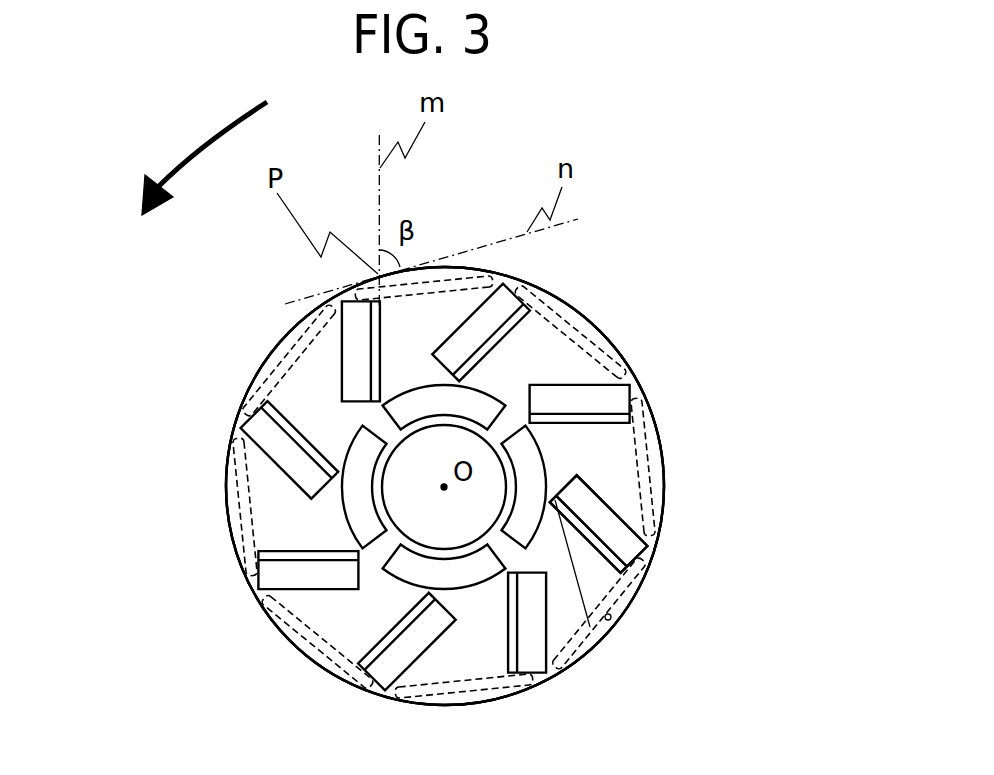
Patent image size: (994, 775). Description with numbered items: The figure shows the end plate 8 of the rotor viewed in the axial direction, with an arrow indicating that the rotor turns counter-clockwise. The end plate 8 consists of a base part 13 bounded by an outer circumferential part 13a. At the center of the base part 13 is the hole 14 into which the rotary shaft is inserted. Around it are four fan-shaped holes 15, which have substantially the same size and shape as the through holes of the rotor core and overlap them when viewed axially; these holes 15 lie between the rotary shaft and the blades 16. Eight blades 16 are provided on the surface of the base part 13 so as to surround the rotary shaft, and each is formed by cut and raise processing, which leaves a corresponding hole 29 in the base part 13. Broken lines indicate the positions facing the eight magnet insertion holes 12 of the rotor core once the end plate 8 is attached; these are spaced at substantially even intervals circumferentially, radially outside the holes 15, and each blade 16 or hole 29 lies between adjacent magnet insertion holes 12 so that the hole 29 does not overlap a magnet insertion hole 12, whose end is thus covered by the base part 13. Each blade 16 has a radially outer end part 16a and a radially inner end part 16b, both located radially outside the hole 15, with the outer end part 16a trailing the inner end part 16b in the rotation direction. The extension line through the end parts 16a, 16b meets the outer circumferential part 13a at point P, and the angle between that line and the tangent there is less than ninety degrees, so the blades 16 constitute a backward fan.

The end plate 8 is at (715, 307).
The magnet insertion hole 12 is at (357, 487).
The base part 13 is at (377, 486).
The outer circumferential part 13a is at (370, 486).
The hole 14 is at (279, 515).
The hole 15 is at (291, 525).
The blade 16 is at (583, 520).
The end part 16a is at (695, 586).
The end part 16b is at (610, 619).
The hole 29 is at (685, 536).